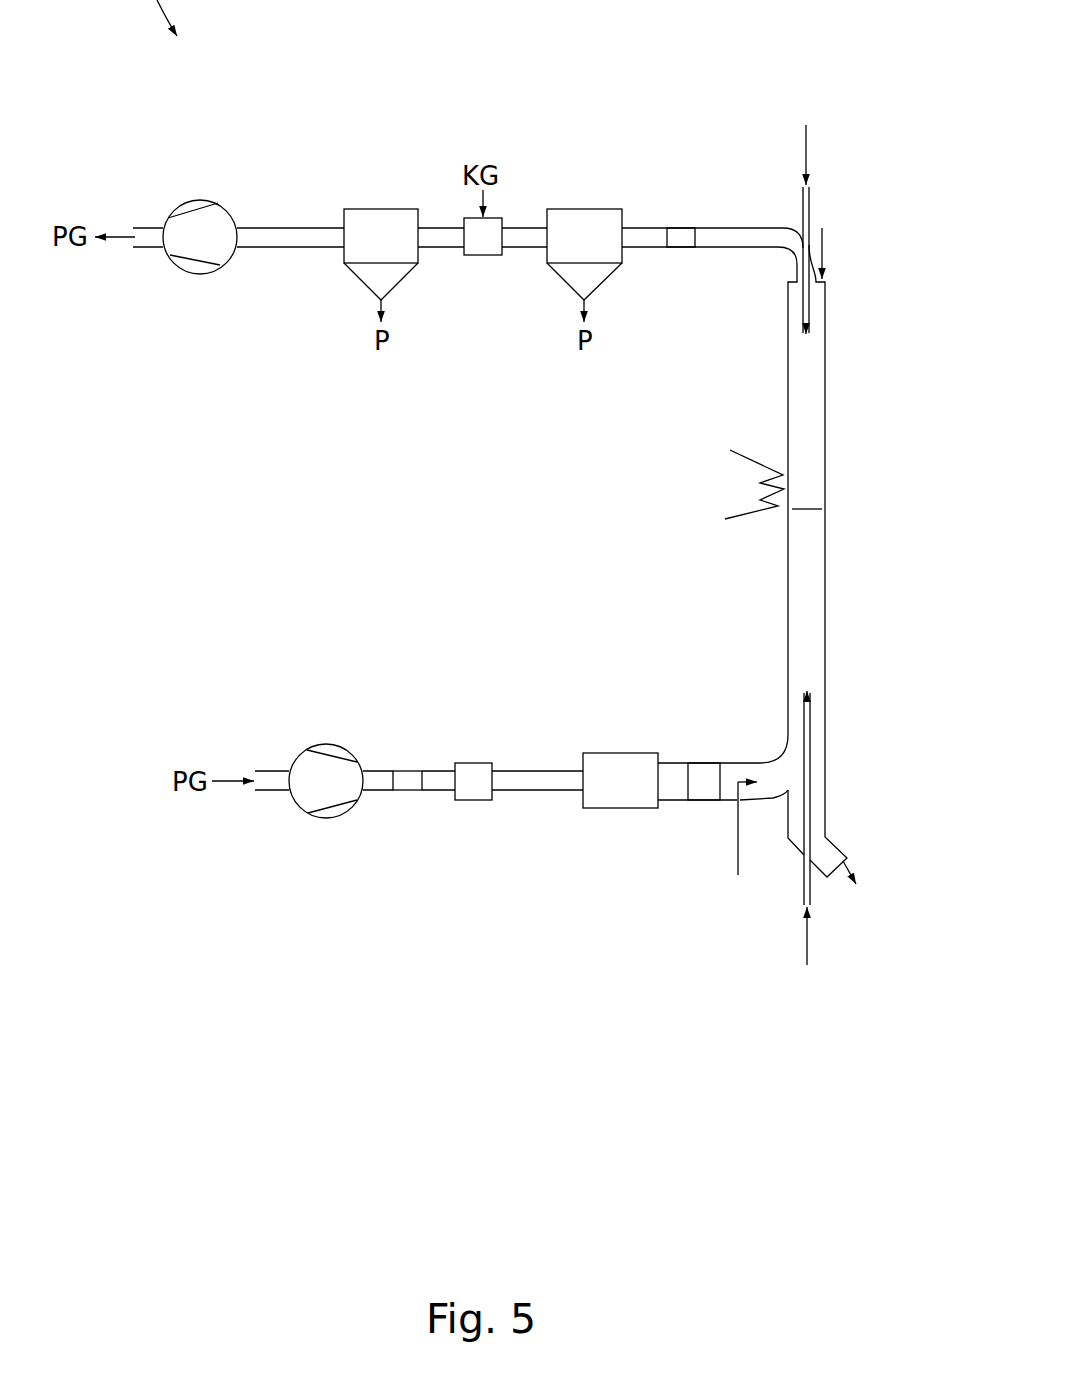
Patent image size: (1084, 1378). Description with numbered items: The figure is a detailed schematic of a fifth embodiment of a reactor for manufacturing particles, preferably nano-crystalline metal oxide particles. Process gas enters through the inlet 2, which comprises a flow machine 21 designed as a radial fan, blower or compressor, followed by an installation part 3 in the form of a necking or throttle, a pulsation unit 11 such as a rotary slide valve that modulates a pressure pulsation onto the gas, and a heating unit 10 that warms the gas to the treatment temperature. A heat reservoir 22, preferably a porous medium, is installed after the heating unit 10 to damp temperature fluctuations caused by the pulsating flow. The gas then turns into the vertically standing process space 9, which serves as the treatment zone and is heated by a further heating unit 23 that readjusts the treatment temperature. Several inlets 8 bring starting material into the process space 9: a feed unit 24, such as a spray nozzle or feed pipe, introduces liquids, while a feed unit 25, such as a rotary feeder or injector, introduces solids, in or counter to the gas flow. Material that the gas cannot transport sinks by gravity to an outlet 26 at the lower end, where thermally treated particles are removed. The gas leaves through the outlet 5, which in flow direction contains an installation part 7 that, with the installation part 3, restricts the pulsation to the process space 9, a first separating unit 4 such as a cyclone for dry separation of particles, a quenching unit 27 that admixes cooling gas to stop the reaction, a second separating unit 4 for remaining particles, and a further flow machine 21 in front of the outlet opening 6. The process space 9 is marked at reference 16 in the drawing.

The inlet 2 is at (423, 915).
The installation part 3 is at (407, 791).
The separating unit 4 is at (398, 208).
The outlet 5 is at (501, 99).
The outlet opening 6 is at (125, 226).
The installation part 7 is at (683, 226).
The inlet 8 is at (796, 209).
The process space 9 is at (826, 415).
The heating unit 10 is at (625, 752).
The pulsation unit 11 is at (474, 762).
The process chamber 16 is at (809, 497).
The flow machine 21 is at (196, 276).
The heat reservoir 22 is at (708, 762).
The further heating unit 23 is at (728, 491).
The feed unit 24 is at (812, 213).
The feed unit 25 is at (822, 240).
The outlet 26 is at (860, 858).
The quenching unit 27 is at (476, 257).